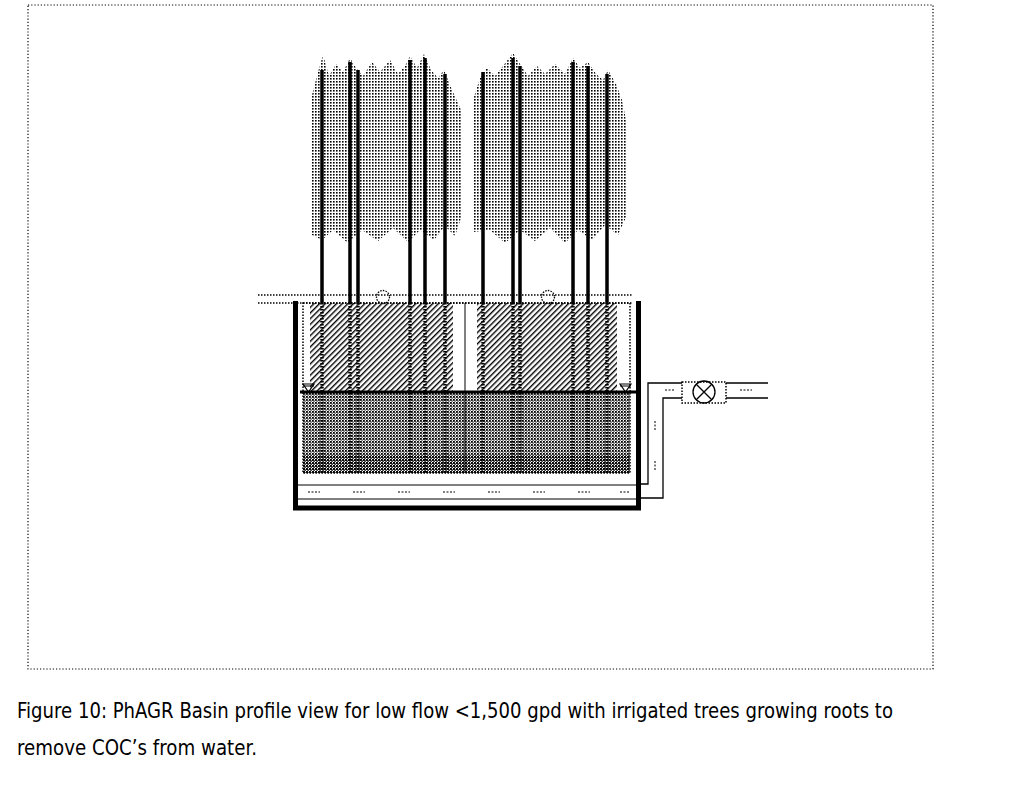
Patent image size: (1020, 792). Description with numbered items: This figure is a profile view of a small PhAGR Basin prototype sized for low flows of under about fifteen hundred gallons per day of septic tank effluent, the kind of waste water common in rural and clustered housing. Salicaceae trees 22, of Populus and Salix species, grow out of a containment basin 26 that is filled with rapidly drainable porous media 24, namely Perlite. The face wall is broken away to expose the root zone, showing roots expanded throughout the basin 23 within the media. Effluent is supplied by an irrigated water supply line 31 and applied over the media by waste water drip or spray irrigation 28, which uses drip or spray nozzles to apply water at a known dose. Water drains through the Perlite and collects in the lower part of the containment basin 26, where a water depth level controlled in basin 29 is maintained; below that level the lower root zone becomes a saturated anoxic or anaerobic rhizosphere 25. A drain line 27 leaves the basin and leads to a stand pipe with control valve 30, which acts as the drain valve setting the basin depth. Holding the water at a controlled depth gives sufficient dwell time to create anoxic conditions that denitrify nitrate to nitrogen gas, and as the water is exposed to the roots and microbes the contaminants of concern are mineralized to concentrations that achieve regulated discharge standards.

The Salicaceae trees 22 is at (313, 137).
The roots expanded throughout the basin 23 is at (318, 342).
The rapidly drainable porous media 24 is at (308, 428).
The saturated anoxic or anaerobic rhizosphere 25 is at (488, 468).
The containment basin 26 is at (438, 514).
The drain line 27 is at (590, 498).
The waste water drip or spray irrigation 28 is at (396, 291).
The water depth level controlled in basin 29 is at (582, 383).
The stand pipe with control valve 30 is at (708, 409).
The irrigated water supply line 31 is at (308, 292).